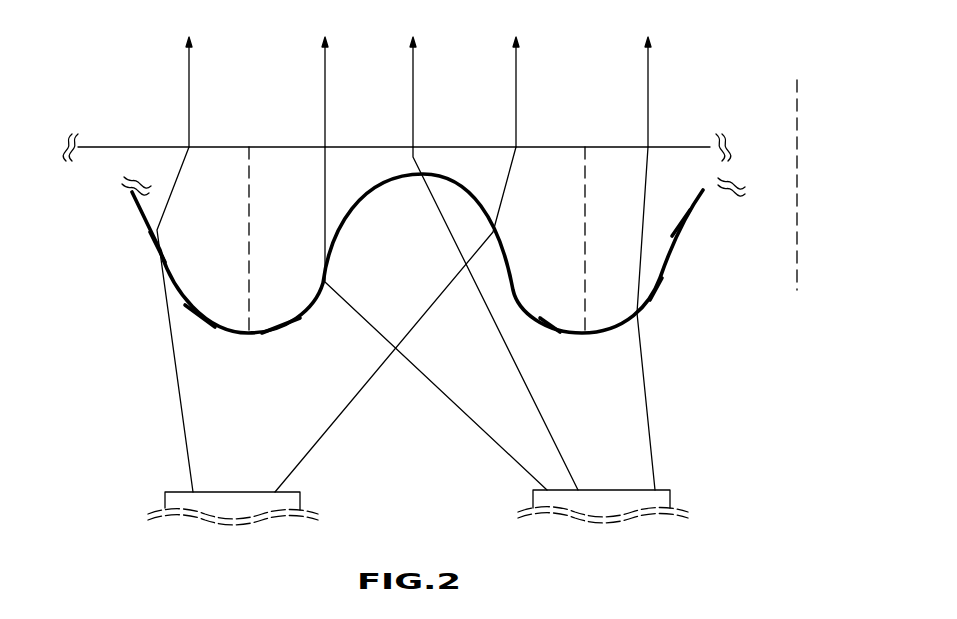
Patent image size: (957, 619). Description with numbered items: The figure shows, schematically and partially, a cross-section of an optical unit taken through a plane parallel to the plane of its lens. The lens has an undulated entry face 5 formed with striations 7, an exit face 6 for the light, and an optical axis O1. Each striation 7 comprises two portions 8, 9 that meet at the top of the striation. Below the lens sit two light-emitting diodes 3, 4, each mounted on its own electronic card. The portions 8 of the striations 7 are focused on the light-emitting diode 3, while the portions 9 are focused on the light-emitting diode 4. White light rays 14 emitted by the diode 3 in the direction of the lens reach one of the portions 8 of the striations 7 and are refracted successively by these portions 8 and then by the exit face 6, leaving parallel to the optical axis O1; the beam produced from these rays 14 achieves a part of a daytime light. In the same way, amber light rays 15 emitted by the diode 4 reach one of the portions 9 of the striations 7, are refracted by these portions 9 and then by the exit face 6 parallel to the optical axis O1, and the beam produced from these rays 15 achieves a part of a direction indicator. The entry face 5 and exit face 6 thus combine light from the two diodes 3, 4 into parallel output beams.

The light-emitting diode 3 is at (228, 500).
The light-emitting diode 4 is at (608, 497).
The undulated entry face 5 is at (148, 218).
The exit face 6 is at (683, 147).
The striations 7 is at (193, 317).
The portions 8 is at (163, 282).
The portions 9 is at (270, 335).
The light rays 14 is at (189, 91).
The light rays 15 is at (325, 100).
The optical axis O1 is at (797, 152).